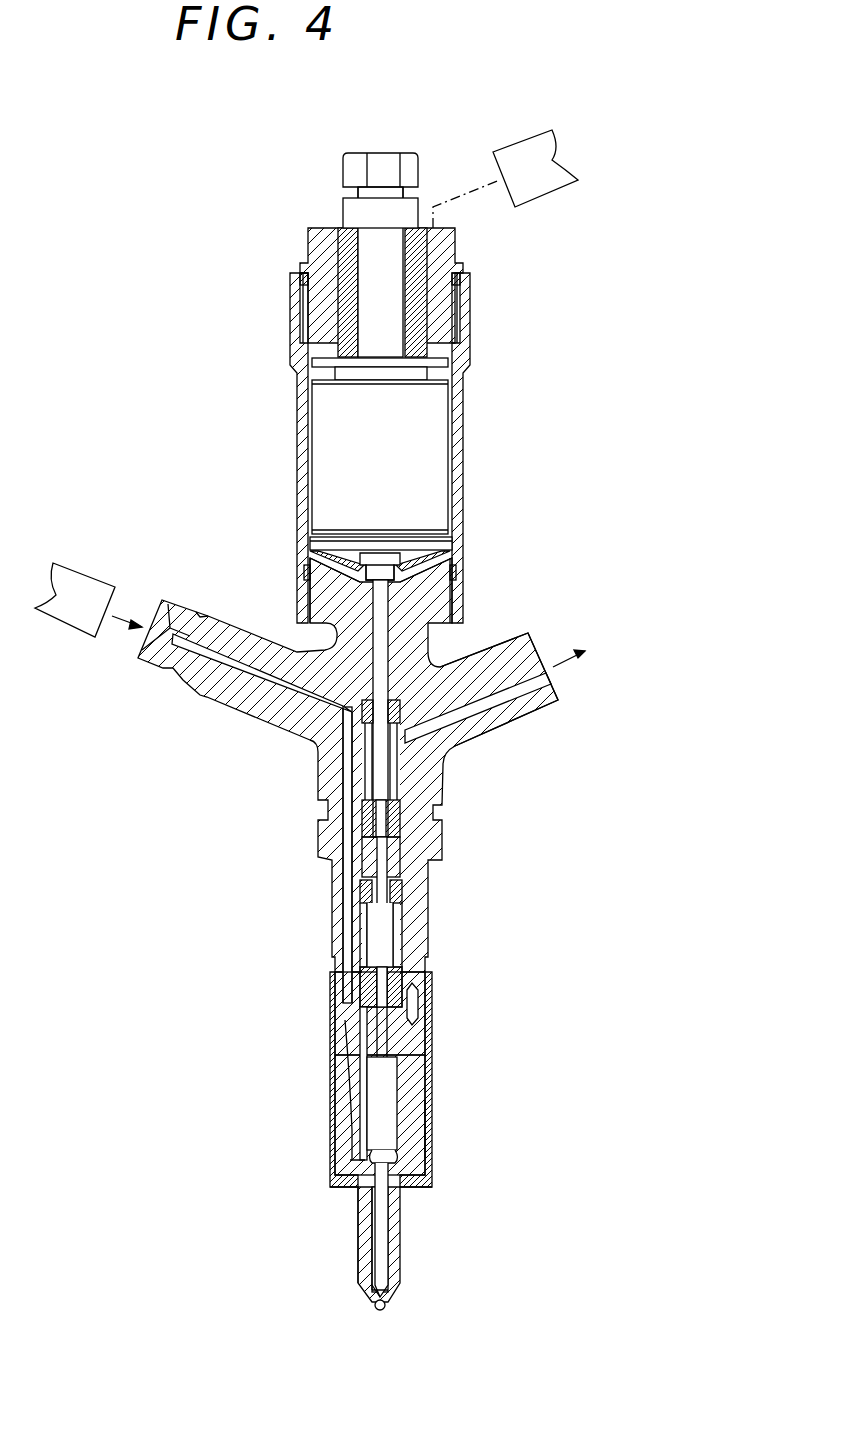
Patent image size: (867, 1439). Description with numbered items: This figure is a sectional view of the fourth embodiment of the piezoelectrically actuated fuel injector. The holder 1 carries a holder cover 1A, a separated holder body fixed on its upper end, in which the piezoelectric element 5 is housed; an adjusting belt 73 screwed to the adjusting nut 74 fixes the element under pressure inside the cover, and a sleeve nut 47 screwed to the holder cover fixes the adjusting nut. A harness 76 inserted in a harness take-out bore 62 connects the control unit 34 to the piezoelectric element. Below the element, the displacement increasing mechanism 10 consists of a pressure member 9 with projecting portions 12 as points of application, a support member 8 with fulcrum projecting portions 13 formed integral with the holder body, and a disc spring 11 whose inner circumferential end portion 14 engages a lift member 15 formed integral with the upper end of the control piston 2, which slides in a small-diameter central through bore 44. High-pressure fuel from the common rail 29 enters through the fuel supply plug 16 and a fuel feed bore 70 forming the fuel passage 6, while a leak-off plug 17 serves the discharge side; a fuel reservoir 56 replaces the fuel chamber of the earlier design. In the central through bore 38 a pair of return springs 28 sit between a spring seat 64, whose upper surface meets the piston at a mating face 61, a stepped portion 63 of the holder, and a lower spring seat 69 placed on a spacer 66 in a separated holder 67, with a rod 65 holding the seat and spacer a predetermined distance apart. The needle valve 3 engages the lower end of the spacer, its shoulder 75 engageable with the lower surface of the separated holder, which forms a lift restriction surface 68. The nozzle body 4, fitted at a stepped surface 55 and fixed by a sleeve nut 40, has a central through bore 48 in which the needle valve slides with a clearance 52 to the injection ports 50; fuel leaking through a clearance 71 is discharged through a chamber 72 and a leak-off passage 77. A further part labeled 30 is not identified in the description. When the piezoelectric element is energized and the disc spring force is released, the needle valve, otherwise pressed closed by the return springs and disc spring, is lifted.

The holder 1 is at (350, 640).
The holder cover 1A is at (297, 432).
The control piston 2 is at (380, 647).
The needle valve 3 is at (380, 1248).
The nozzle body 4 is at (347, 1127).
The piezoelectric element 5 is at (427, 470).
The fuel passage 6 is at (375, 838).
The support member 8 is at (447, 587).
The pressure member 9 is at (425, 533).
The displacement increasing mechanism 10 is at (310, 555).
The disc spring 11 is at (310, 578).
The projecting portions 12 is at (455, 550).
The fulcrum projecting portions 13 is at (455, 572).
The inner circumferential end portion 14 is at (393, 567).
The lift member 15 is at (380, 560).
The fuel supply plug 16 is at (240, 645).
The leak-off plug 17 is at (522, 700).
The return springs 28 is at (400, 807).
The common rail 29 is at (85, 582).
The nozzle sleeve 30 is at (333, 1001).
The control unit 34 is at (515, 163).
The central through bore 38 is at (398, 925).
The sleeve nut 40 is at (428, 1187).
The small-diameter central through bore 44 is at (290, 712).
The sleeve nut 47 is at (448, 258).
The central through bore 48 is at (385, 1260).
The injection ports 50 is at (385, 1303).
The clearance 52 is at (365, 1223).
The stepped surface 55 is at (340, 1185).
The fuel reservoir 56 is at (430, 1155).
The mating face 61 is at (347, 790).
The harness take-out bore 62 is at (297, 318).
The stepped portion 63 is at (402, 722).
The spring seat 64 is at (362, 827).
The rod 65 is at (357, 935).
The spacer 66 is at (400, 1020).
The separated holder 67 is at (340, 1043).
The lift restriction surface 68 is at (410, 1057).
The spring seat 69 is at (415, 1005).
The fuel feed bore 70 is at (345, 892).
The clearance 71 is at (387, 1102).
The chamber 72 is at (397, 772).
The adjusting belt 73 is at (377, 238).
The adjusting nut 74 is at (343, 277).
The shoulder 75 is at (370, 1058).
The harness 76 is at (430, 297).
The leak-off passage 77 is at (520, 680).